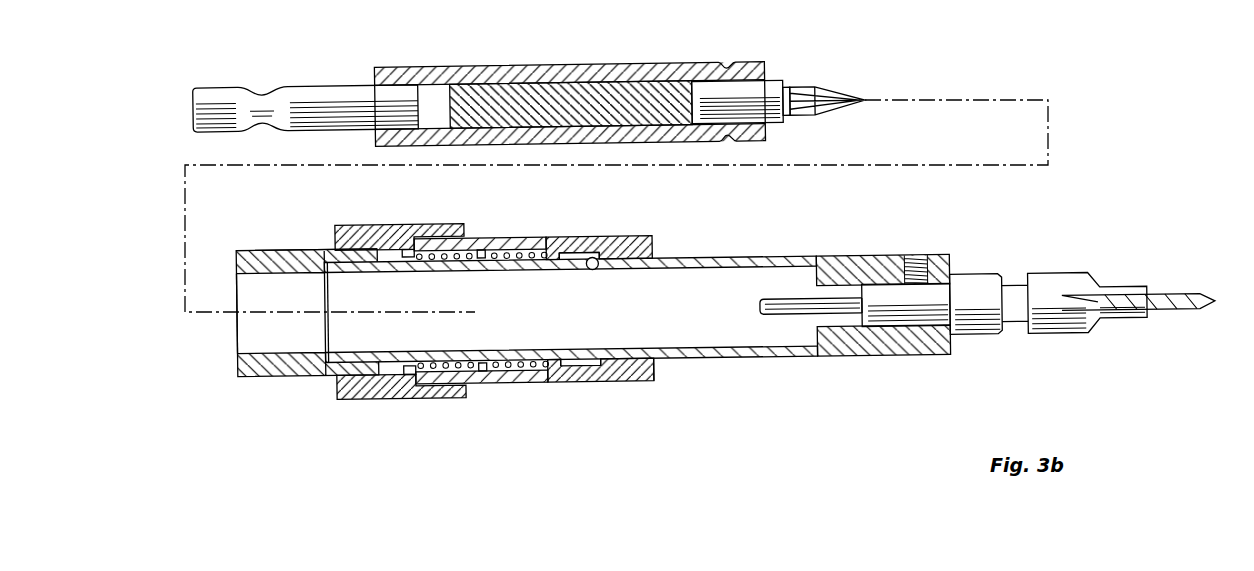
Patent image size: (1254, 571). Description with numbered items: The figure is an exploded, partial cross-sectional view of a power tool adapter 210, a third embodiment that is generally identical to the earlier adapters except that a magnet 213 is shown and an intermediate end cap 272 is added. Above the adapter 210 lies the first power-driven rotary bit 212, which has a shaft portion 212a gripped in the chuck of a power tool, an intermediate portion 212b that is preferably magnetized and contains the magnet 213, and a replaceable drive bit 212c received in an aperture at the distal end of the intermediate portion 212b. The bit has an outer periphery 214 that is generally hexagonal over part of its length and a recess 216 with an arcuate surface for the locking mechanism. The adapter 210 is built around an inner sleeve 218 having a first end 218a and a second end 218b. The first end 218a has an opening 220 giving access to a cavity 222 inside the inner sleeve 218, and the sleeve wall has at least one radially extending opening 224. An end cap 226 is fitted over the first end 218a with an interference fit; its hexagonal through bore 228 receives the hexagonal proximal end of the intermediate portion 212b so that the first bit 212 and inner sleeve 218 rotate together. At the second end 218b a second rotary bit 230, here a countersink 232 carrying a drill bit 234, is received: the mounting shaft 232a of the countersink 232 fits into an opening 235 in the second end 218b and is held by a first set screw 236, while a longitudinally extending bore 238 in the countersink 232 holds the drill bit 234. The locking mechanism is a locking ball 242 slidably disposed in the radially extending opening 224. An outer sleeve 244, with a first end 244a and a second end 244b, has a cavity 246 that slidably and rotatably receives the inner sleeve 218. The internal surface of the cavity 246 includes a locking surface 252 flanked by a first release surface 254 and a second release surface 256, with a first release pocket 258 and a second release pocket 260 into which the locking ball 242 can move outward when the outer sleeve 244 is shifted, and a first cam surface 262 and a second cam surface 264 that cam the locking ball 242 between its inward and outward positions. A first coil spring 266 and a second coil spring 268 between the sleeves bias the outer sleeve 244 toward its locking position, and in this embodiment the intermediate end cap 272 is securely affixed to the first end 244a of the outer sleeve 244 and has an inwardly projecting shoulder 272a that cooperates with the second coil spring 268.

The power tool adapter 210 is at (848, 60).
The first bit 212 is at (465, 70).
The shaft portion 212a is at (215, 96).
The intermediate portion 212b is at (637, 70).
The replaceable drive bit 212c is at (862, 93).
The magnet 213 is at (540, 101).
The outer periphery 214 is at (397, 72).
The recess 216 is at (733, 70).
The inner sleeve 218 is at (685, 362).
The first end of inner sleeve 218a is at (326, 364).
The second end of inner sleeve 218b is at (780, 260).
The opening 220 is at (240, 377).
The cavity 222 is at (643, 293).
The radially extending opening 224 is at (635, 242).
The end cap 226 is at (288, 250).
The through bore 228 is at (263, 354).
The second rotary bit 230 is at (980, 281).
The countersink 232 is at (1152, 318).
The mounting shaft 232a is at (897, 322).
The drill bit 234 is at (1180, 298).
The opening 235 is at (940, 336).
The first set screw 236 is at (908, 262).
The longitudinally extending bore 238 is at (1062, 300).
The locking ball 242 is at (603, 256).
The outer sleeve 244 is at (510, 386).
The first end of outer sleeve 244a is at (437, 388).
The second end of outer sleeve 244b is at (672, 386).
The cavity 246 is at (523, 238).
The locking surface 252 is at (597, 261).
The first release surface 254 is at (630, 386).
The second release surface 256 is at (560, 386).
The first release pocket 258 is at (658, 387).
The second release pocket 260 is at (600, 386).
The first cam surface 262 is at (640, 242).
The second cam surface 264 is at (550, 254).
The first coil spring 266 is at (487, 248).
The second coil spring 268 is at (470, 240).
The intermediate end cap 272 is at (390, 225).
The inwardly projecting shoulder 272a is at (402, 400).